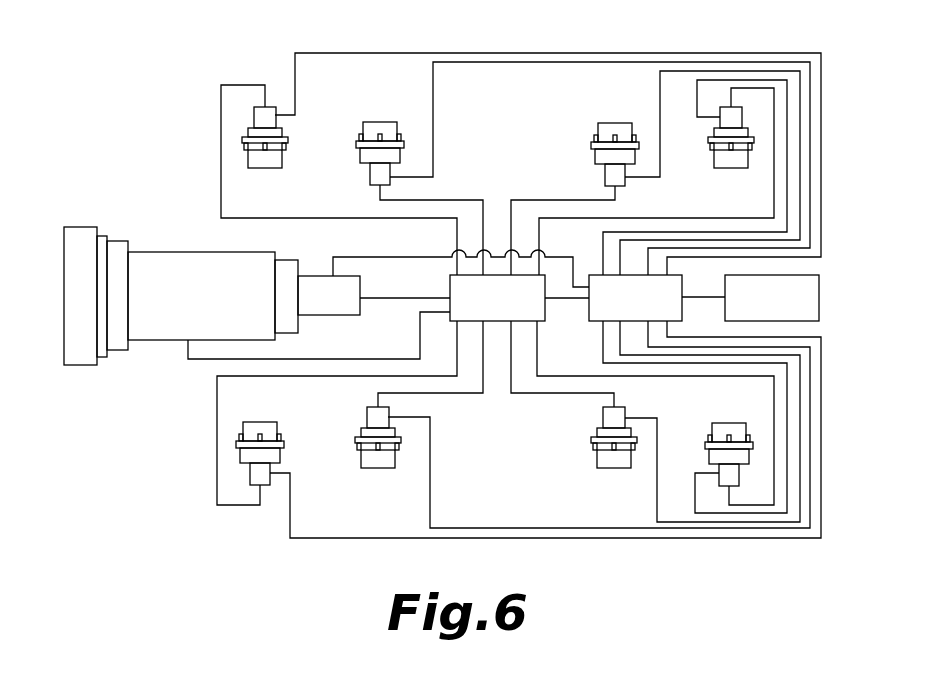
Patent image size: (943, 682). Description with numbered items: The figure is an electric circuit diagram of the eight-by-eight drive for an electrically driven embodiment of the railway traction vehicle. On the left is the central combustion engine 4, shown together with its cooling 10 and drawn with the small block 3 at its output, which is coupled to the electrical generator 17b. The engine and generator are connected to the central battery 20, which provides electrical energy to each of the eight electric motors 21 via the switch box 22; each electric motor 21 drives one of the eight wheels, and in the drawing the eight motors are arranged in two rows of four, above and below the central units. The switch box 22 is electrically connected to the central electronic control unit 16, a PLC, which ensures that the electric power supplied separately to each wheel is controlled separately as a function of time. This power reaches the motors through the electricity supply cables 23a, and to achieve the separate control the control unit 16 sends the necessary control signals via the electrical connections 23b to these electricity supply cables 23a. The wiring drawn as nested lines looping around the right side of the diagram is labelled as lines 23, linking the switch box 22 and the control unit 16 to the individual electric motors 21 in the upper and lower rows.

The coupling 3 is at (290, 331).
The central combustion engine 4 is at (163, 270).
The cooling 10 is at (73, 240).
The central electronic control unit (PLC) 16 is at (498, 307).
The electrical generator 17b is at (328, 292).
The central battery 20 is at (806, 297).
The electric motor 21 is at (375, 178).
The switch box 22 is at (600, 288).
The signal lines 23 is at (788, 204).
The electricity supply cables 23a is at (552, 217).
The electrical connections 23b is at (420, 340).